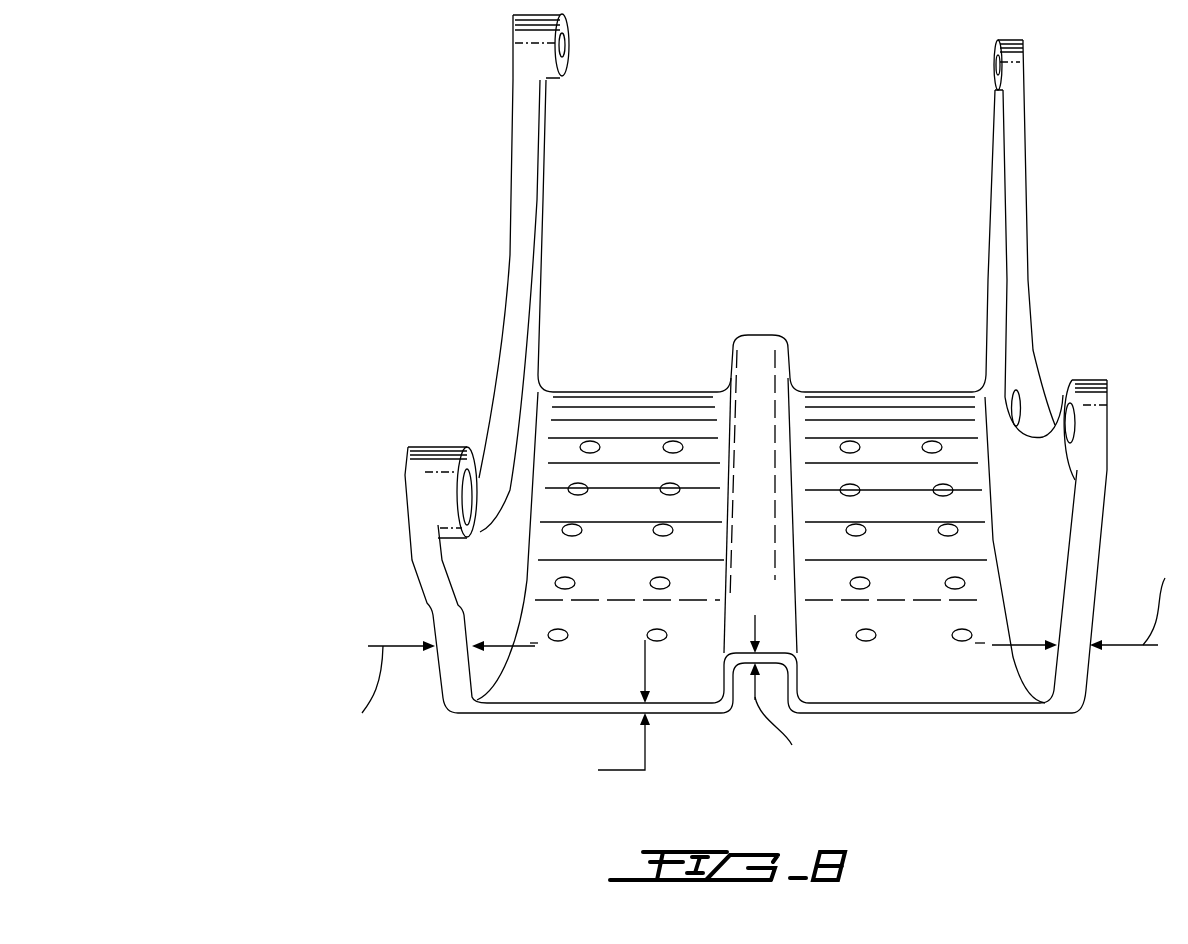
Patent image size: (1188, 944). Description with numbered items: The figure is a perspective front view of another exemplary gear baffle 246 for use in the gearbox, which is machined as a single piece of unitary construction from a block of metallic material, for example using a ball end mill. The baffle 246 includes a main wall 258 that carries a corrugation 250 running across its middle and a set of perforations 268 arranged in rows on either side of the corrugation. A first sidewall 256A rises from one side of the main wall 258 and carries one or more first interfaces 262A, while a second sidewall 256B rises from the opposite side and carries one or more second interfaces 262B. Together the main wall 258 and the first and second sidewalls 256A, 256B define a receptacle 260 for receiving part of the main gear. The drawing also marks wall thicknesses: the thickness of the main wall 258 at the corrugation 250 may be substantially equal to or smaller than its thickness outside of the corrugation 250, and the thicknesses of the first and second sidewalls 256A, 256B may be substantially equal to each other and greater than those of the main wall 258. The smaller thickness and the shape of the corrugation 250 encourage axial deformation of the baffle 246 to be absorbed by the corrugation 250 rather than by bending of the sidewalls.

The gear baffle 246 is at (306, 171).
The corrugation 250 is at (762, 350).
The first sidewall 256A is at (512, 322).
The second sidewall 256B is at (1018, 232).
The main wall 258 is at (905, 714).
The receptacle 260 is at (784, 212).
The first interfaces 262A is at (548, 42).
The second interfaces 262B is at (1005, 70).
The perforations 268 is at (932, 440).